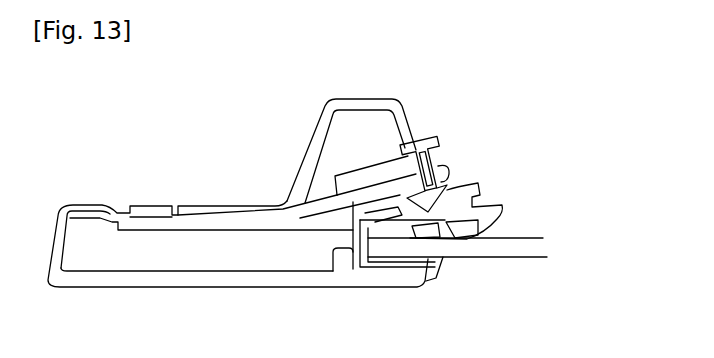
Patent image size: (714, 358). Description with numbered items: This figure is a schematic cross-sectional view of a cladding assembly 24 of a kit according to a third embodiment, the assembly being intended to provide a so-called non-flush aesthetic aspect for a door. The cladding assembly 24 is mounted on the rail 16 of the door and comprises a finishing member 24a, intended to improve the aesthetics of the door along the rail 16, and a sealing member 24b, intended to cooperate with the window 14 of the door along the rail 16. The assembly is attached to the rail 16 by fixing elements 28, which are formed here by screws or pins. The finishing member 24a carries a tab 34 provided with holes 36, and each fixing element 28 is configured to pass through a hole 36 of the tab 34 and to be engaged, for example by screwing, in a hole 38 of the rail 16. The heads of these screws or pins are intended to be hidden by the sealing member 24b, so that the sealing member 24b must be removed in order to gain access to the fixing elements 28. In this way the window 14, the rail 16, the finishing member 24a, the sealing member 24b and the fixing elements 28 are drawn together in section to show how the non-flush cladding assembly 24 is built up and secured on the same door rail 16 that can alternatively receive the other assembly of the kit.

The window 14 is at (528, 252).
The rail 16 is at (323, 107).
The cladding assembly 24 is at (326, 200).
The finishing member 24a is at (232, 292).
The sealing member 24b is at (484, 200).
The fixing elements 28 is at (401, 181).
The tab 34 is at (341, 272).
The holes 36 is at (448, 196).
The holes 38 is at (449, 151).